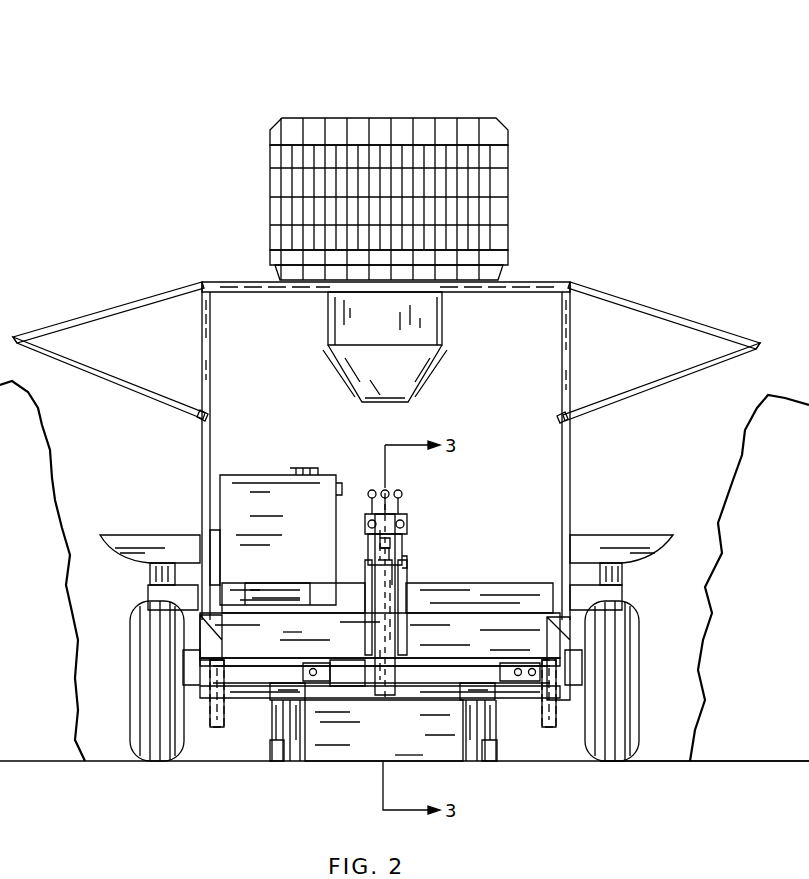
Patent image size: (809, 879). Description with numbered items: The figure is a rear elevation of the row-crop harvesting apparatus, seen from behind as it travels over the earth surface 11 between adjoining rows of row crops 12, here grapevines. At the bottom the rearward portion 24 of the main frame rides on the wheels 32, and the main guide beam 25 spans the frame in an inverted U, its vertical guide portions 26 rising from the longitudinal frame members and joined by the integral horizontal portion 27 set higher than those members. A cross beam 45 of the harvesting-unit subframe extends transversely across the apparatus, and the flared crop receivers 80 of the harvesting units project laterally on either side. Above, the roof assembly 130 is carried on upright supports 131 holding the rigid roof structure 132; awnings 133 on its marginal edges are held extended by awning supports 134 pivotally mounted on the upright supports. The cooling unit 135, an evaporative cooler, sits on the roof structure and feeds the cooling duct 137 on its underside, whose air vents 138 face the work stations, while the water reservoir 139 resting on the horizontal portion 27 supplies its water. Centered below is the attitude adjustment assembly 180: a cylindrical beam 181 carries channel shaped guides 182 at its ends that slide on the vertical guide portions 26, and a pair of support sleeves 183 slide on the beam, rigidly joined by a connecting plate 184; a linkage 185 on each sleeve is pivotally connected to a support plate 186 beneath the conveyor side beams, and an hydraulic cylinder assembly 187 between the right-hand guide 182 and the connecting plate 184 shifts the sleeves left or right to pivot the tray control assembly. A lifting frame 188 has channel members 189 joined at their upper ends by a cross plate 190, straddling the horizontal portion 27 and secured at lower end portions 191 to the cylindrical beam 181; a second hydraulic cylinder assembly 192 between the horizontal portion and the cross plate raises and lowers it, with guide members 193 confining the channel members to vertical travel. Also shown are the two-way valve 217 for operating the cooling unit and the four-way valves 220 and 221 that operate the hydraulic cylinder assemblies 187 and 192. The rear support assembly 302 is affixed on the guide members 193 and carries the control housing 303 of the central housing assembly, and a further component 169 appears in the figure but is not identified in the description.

The earth surface 11 is at (648, 766).
The row crops 12 is at (20, 436).
The rearward portion 24 is at (555, 627).
The main guide beam 25 is at (475, 627).
The vertical guide portions 26 is at (205, 632).
The horizontal portion 27 is at (380, 635).
The wheels 32 is at (135, 706).
The cross beam 45 is at (207, 656).
The crop receiver 80 is at (132, 548).
The roof assembly 130 is at (540, 273).
The upright supports 131 is at (212, 448).
The roof structure 132 is at (506, 293).
The awnings 133 is at (125, 302).
The awning supports 134 is at (95, 364).
The cooling unit 135 is at (440, 115).
The cooling duct 137 is at (328, 322).
The air vents 138 is at (335, 373).
The water reservoir 139 is at (276, 536).
The lower housing 169 is at (384, 730).
The attitude adjustment assembly 180 is at (397, 594).
The cylindrical beam 181 is at (340, 690).
The channel shaped guides 182 is at (212, 728).
The support sleeves 183 is at (285, 692).
The connecting plate 184 is at (370, 690).
The linkage 185 is at (272, 724).
The support plate 186 is at (280, 745).
The hydraulic cylinder assembly 187 is at (455, 663).
The lifting frame 188 is at (393, 549).
The channel members 189 is at (380, 561).
The cross plate 190 is at (378, 521).
The lower end portions 191 is at (390, 698).
The hydraulic cylinder assembly 192 is at (402, 540).
The guide members 193 is at (365, 582).
The two-way valve 217 is at (371, 490).
The four-way valve 220 is at (387, 491).
The four-way valve 221 is at (402, 494).
The rear support assembly 302 is at (408, 566).
The control housing 303 is at (370, 540).